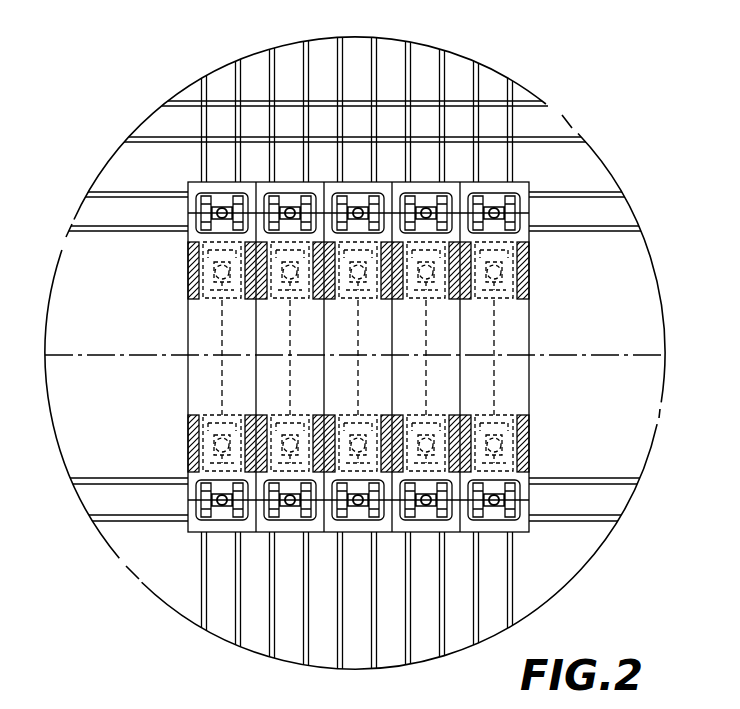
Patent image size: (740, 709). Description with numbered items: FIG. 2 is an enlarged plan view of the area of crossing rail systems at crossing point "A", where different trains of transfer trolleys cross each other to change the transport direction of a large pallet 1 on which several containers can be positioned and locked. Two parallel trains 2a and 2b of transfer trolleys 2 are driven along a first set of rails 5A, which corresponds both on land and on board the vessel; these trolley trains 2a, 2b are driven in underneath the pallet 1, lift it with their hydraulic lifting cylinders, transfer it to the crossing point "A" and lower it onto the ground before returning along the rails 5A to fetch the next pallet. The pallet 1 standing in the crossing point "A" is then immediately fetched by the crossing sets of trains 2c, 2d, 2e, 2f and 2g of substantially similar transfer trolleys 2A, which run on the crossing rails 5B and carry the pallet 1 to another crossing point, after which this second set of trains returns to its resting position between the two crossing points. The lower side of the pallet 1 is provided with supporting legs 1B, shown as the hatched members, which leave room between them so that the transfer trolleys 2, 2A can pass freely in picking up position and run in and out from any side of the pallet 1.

The pallet 1 is at (530, 450).
The supporting legs 1B is at (188, 266).
The transfer trolleys 2 is at (495, 503).
The trolley train 2a is at (513, 212).
The trolley train 2b is at (513, 498).
The transfer trolleys 2A is at (213, 413).
The crossing train 2c is at (222, 352).
The crossing train 2d is at (290, 352).
The crossing train 2e is at (358, 352).
The crossing train 2f is at (426, 352).
The crossing train 2g is at (494, 405).
The first set of rails 5A is at (587, 100).
The crossing rails 5B is at (408, 83).
The crossing point A is at (118, 558).